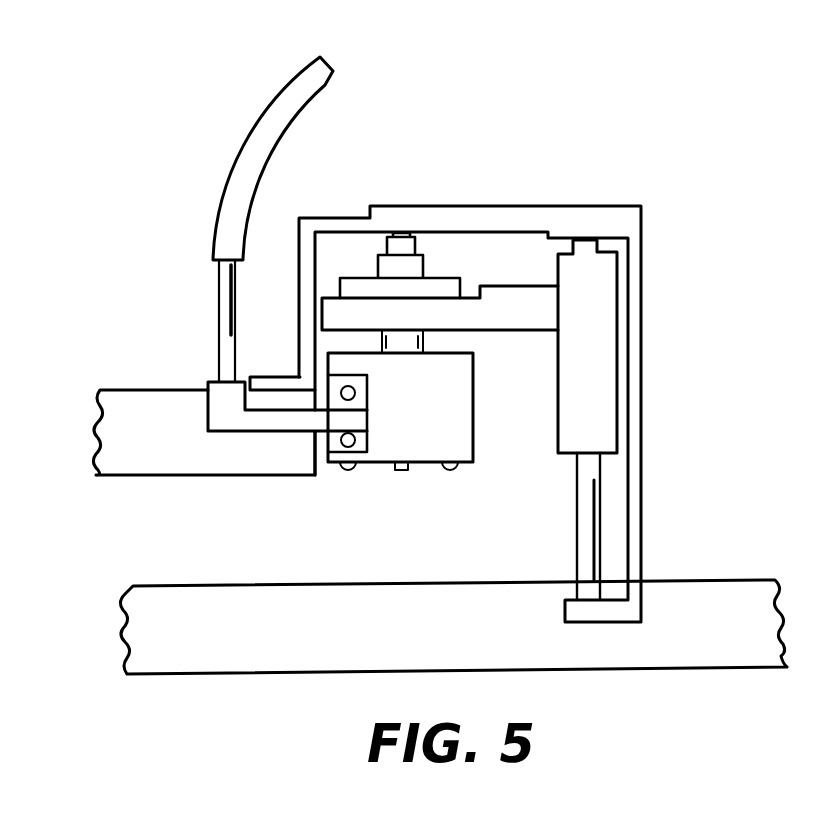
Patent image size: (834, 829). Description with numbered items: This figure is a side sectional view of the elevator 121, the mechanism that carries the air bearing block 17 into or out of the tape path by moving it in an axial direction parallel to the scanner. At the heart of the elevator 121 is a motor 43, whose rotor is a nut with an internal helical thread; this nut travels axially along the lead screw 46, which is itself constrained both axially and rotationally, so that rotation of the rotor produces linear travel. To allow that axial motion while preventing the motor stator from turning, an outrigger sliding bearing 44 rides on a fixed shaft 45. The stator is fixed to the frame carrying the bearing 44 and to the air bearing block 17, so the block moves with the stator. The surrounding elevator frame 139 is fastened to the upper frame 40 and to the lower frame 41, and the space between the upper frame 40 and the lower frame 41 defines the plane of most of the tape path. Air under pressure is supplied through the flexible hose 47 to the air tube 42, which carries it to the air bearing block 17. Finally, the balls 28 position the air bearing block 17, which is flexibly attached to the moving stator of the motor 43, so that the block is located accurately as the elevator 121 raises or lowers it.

The air bearing block 17 is at (475, 410).
The balls 28 is at (351, 470).
The upper frame 40 is at (245, 478).
The lower frame 41 is at (262, 586).
The air tube 42 is at (218, 286).
The motor 43 is at (450, 278).
The outrigger sliding bearing 44 is at (555, 364).
The fixed shaft 45 is at (577, 491).
The lead screw 46 is at (400, 470).
The flexible hose 47 is at (233, 172).
The elevator 121 is at (665, 335).
The elevator frame 139 is at (483, 206).